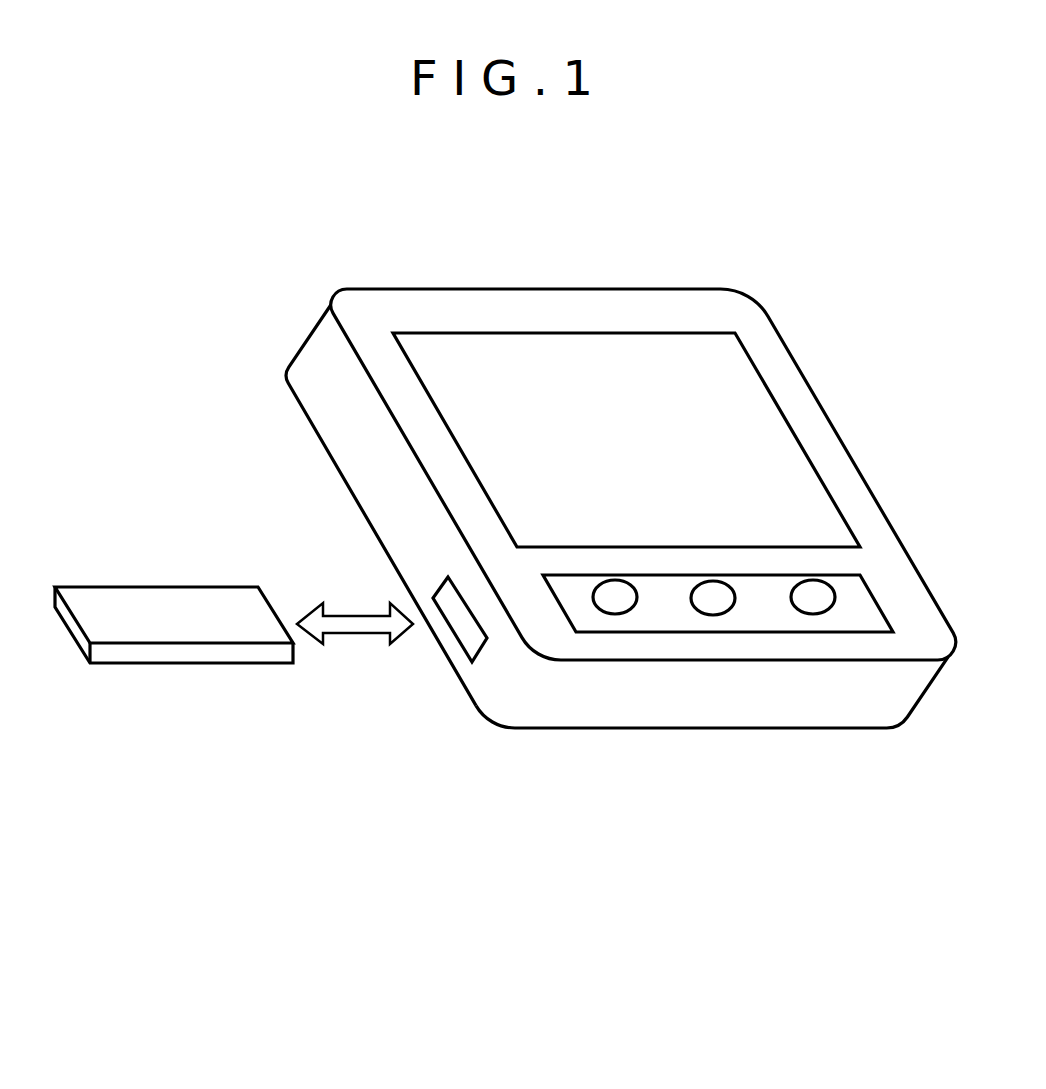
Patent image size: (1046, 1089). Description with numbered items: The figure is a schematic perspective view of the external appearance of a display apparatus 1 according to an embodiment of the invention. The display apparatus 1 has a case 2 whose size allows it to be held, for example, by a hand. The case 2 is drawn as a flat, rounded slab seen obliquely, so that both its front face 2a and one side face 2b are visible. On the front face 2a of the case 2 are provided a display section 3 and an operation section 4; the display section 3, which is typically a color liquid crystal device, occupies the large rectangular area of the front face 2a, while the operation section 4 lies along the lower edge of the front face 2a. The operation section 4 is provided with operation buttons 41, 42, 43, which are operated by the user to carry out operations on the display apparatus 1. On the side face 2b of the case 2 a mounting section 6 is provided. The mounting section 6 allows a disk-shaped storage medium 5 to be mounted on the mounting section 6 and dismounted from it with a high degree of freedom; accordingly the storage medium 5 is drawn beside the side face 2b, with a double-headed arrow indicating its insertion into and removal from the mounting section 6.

The display apparatus 1 is at (590, 566).
The case 2 is at (590, 468).
The front face 2a is at (566, 300).
The side face 2b is at (338, 425).
The display section 3 is at (757, 425).
The operation section 4 is at (744, 655).
The operation button 41 is at (620, 614).
The operation button 42 is at (720, 615).
The operation button 43 is at (822, 614).
The disk-shaped storage medium 5 is at (154, 595).
The mounting section 6 is at (465, 633).